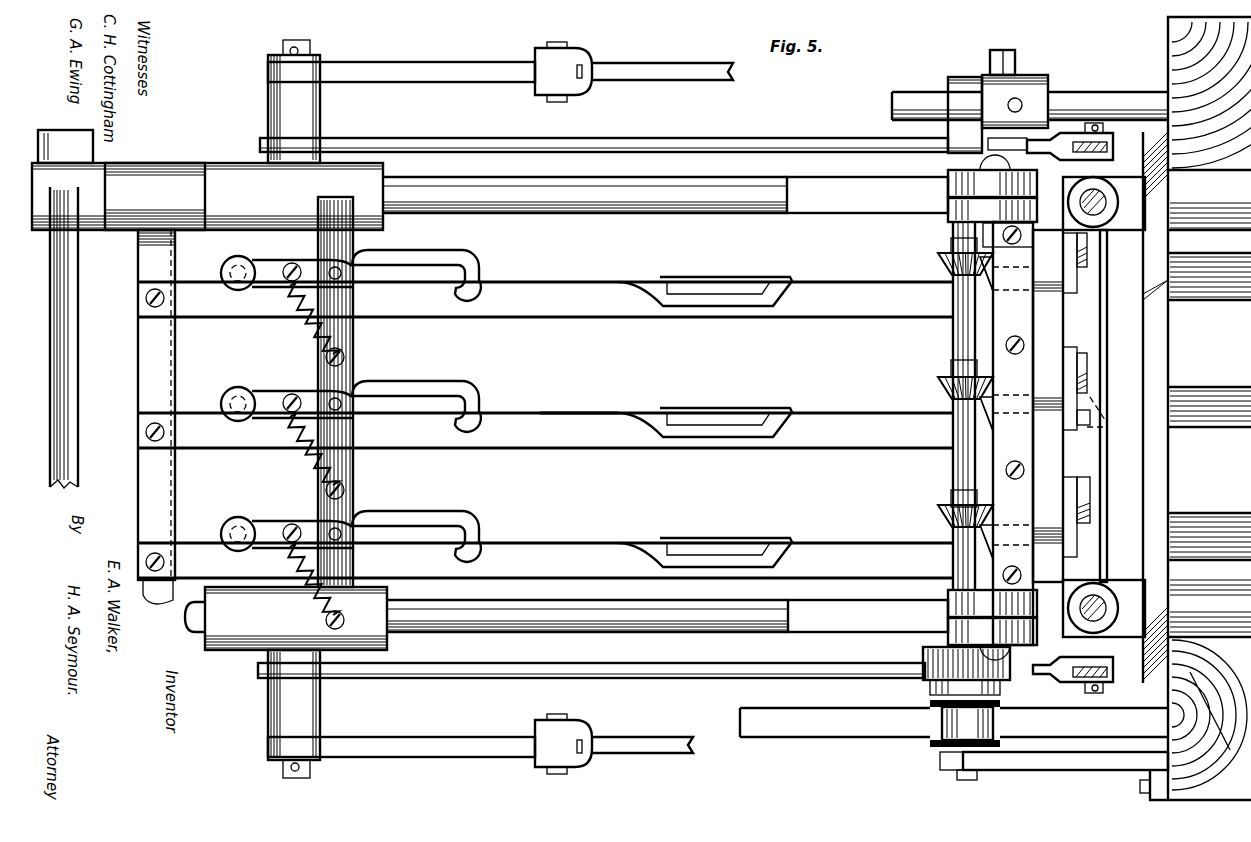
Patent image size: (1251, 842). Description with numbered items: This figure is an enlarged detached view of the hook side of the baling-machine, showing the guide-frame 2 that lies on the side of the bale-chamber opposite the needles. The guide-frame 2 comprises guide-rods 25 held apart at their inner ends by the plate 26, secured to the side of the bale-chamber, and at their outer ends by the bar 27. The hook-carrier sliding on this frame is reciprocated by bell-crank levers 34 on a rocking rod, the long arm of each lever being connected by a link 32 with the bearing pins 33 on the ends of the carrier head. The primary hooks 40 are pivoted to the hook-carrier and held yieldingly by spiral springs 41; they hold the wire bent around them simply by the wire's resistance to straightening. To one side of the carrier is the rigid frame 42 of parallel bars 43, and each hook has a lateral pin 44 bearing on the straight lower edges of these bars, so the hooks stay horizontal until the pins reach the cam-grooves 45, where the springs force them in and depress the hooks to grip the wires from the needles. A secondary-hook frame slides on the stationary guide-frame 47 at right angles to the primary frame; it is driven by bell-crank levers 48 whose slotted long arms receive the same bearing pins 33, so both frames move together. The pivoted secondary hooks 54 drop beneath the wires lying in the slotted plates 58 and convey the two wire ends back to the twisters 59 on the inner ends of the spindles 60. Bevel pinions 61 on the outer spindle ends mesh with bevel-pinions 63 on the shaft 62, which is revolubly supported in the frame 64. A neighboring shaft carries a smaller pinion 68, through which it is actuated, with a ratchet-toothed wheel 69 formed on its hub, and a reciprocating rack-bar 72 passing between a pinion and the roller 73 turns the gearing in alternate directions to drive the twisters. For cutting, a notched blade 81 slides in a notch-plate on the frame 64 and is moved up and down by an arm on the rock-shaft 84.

The guide-frame 2 is at (772, 404).
The guide-rods 25 is at (512, 213).
The plate 26 is at (1158, 343).
The bar 27 is at (80, 395).
The link 32 is at (425, 409).
The bearing pins 33 is at (310, 48).
The bell-crank levers 34 is at (634, 408).
The hooks 40 is at (416, 398).
The spiral springs 41 is at (303, 331).
The rigid frame 42 is at (579, 400).
The parallel bars 43 is at (545, 430).
The lateral pin 44 is at (247, 262).
The cam-grooves 45 is at (735, 307).
The stationary guide-frame 47 is at (1110, 194).
The bell-crank levers 48 is at (603, 401).
The pivoted hooks 54 is at (1090, 258).
The slotted plates 58 is at (1107, 293).
The twisters 59 is at (1104, 419).
The spindles 60 is at (1052, 286).
The bevel pinions 61 is at (994, 291).
The shaft 62 is at (953, 465).
The bevel-pinions 63 is at (938, 259).
The frame 64 is at (948, 186).
The smaller pinion 68 is at (923, 655).
The ratchet-toothed wheel 69 is at (1000, 688).
The reciprocating rack-bar 72 is at (954, 739).
The roller 73 is at (1000, 721).
The notched blade 81 is at (990, 62).
The rock-shaft 84 is at (1130, 92).